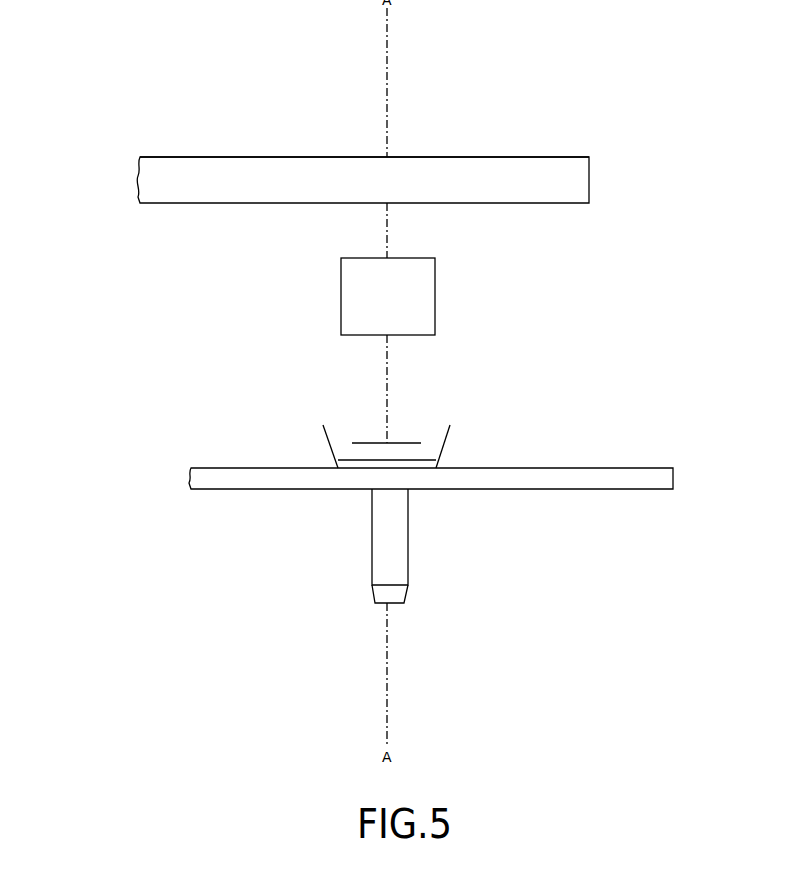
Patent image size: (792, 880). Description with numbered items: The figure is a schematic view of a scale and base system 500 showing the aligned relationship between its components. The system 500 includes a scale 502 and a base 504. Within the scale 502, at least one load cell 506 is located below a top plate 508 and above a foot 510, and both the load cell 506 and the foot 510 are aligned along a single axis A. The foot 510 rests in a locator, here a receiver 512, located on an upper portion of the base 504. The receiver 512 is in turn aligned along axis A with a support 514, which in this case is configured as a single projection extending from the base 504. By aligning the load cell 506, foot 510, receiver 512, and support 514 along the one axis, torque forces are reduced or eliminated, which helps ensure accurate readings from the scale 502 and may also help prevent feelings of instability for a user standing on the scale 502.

The scale and base system 500 is at (670, 238).
The scale 502 is at (558, 172).
The base 504 is at (663, 477).
The load cell 506 is at (418, 299).
The top plate 508 is at (436, 170).
The foot 510 is at (403, 441).
The receiver 512 is at (443, 440).
The support 514 is at (397, 560).